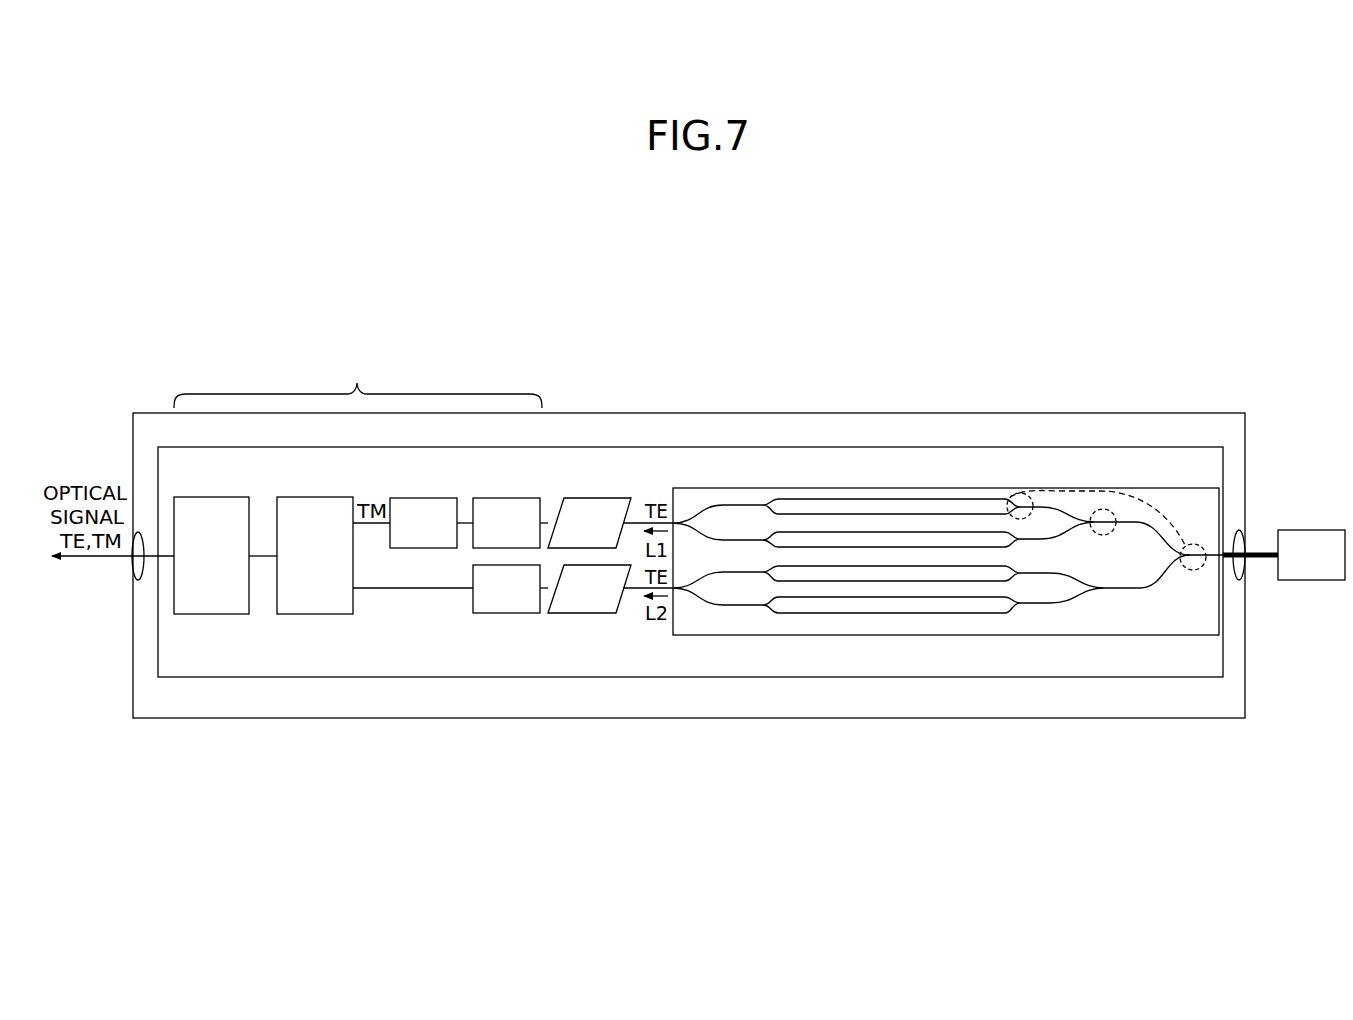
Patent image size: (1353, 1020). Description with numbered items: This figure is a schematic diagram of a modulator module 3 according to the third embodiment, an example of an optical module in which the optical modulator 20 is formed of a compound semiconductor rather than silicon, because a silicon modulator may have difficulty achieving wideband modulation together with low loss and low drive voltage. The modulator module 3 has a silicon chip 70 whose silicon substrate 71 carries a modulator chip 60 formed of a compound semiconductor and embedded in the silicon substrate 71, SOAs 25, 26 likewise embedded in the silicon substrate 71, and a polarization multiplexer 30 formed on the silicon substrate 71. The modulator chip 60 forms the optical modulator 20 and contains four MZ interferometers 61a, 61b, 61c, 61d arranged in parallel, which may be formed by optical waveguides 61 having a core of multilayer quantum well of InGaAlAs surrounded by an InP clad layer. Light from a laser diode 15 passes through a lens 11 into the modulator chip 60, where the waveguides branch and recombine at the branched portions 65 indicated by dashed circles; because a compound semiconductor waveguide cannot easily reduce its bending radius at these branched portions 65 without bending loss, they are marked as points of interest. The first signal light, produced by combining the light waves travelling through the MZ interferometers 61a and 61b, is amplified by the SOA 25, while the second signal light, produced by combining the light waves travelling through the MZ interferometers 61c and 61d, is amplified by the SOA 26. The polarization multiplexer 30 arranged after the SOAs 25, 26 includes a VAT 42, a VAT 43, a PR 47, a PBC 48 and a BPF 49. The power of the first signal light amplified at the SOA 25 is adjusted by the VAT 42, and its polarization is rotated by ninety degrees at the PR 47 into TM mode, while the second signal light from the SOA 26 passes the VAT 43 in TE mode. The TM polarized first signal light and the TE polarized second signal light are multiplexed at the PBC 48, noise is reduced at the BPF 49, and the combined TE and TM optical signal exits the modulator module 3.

The modulator module 3 is at (1172, 413).
The lens 11 is at (1244, 568).
The laser diode (LD) 15 is at (1312, 530).
The optical modulator 20 is at (1208, 484).
The SOA 25 is at (586, 498).
The SOA 26 is at (590, 613).
The polarization multiplexer 30 is at (358, 383).
The VAT 42 is at (507, 498).
The VAT 43 is at (507, 613).
The PR 47 is at (422, 498).
The PBC 48 is at (312, 497).
The BPF 49 is at (212, 497).
The modulator chip 60 is at (1147, 488).
The optical waveguides 61 is at (695, 578).
The MZ interferometer 61a is at (858, 495).
The MZ interferometer 61b is at (894, 527).
The MZ interferometer 61c is at (842, 584).
The MZ interferometer 61d is at (912, 616).
The branched portions 65 is at (1104, 490).
The silicon chip 70 is at (1147, 447).
The silicon substrate 71 is at (1213, 652).